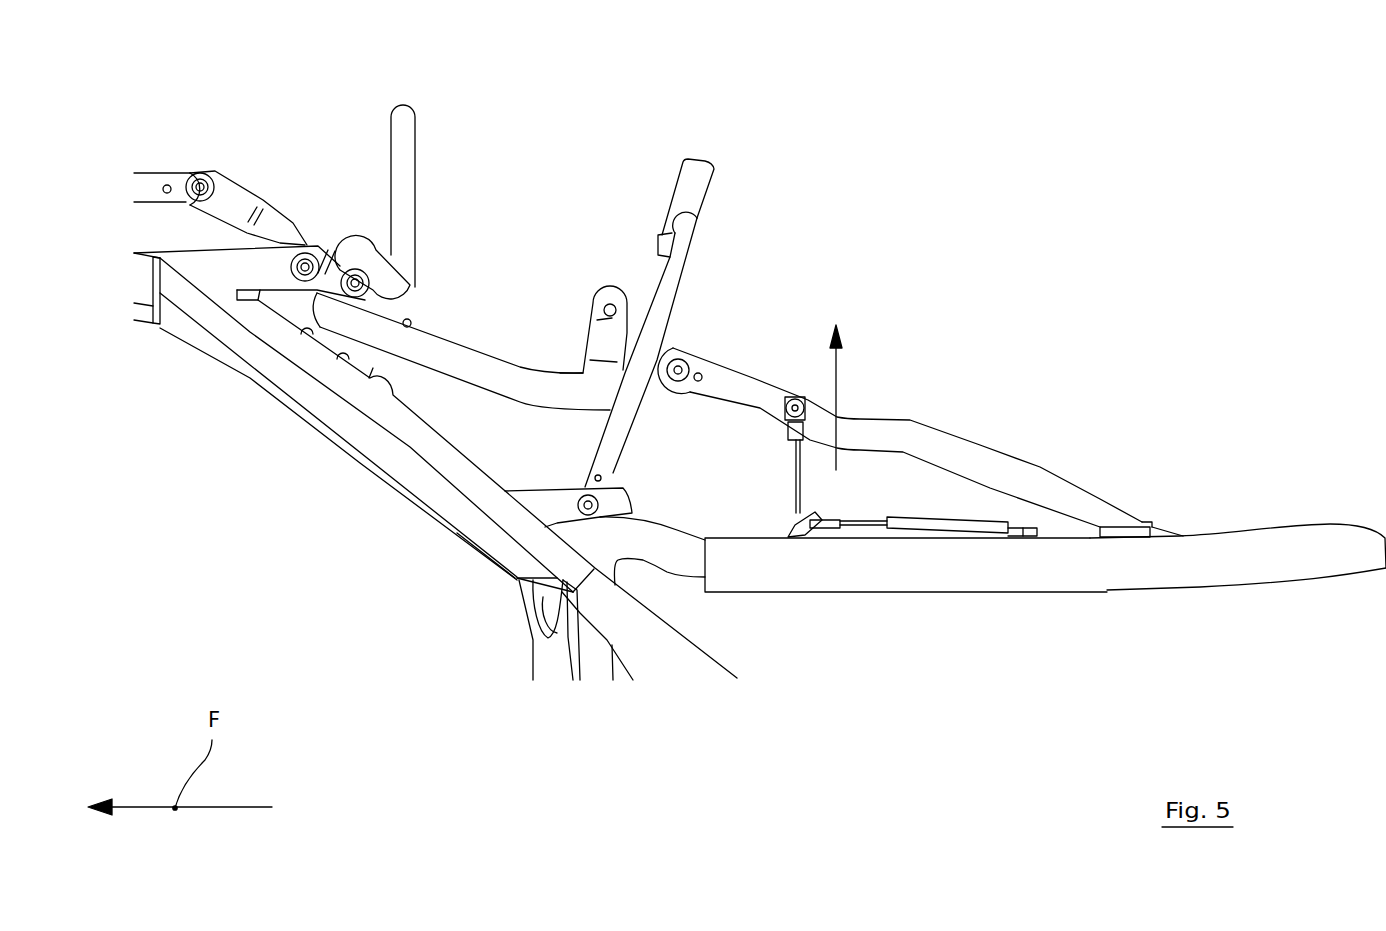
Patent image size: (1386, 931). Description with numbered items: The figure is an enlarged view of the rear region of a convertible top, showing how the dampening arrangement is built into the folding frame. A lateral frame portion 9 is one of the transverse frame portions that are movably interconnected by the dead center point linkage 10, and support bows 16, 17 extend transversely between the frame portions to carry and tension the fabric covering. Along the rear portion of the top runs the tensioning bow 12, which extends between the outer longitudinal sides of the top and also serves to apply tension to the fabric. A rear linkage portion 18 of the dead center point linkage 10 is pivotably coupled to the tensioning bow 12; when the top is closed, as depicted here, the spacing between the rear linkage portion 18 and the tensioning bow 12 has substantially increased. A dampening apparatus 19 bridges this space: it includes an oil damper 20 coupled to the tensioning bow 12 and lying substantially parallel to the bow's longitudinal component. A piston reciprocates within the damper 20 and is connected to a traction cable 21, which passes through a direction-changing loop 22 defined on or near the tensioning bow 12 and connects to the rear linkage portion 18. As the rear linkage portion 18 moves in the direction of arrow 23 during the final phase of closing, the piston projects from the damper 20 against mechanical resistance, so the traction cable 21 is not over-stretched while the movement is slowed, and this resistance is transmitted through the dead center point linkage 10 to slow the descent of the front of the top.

The lateral frame portion 9 is at (409, 447).
The dead center point linkage 10 is at (448, 291).
The tensioning bow 12 is at (1012, 573).
The support bow 16 is at (407, 122).
The support bow 17 is at (699, 180).
The rear linkage portion 18 is at (973, 466).
The dampening apparatus 19 is at (742, 502).
The oil damper 20 is at (955, 530).
The traction cable 21 is at (795, 472).
The direction-changing loop 22 is at (806, 518).
The arrow 23 is at (836, 399).